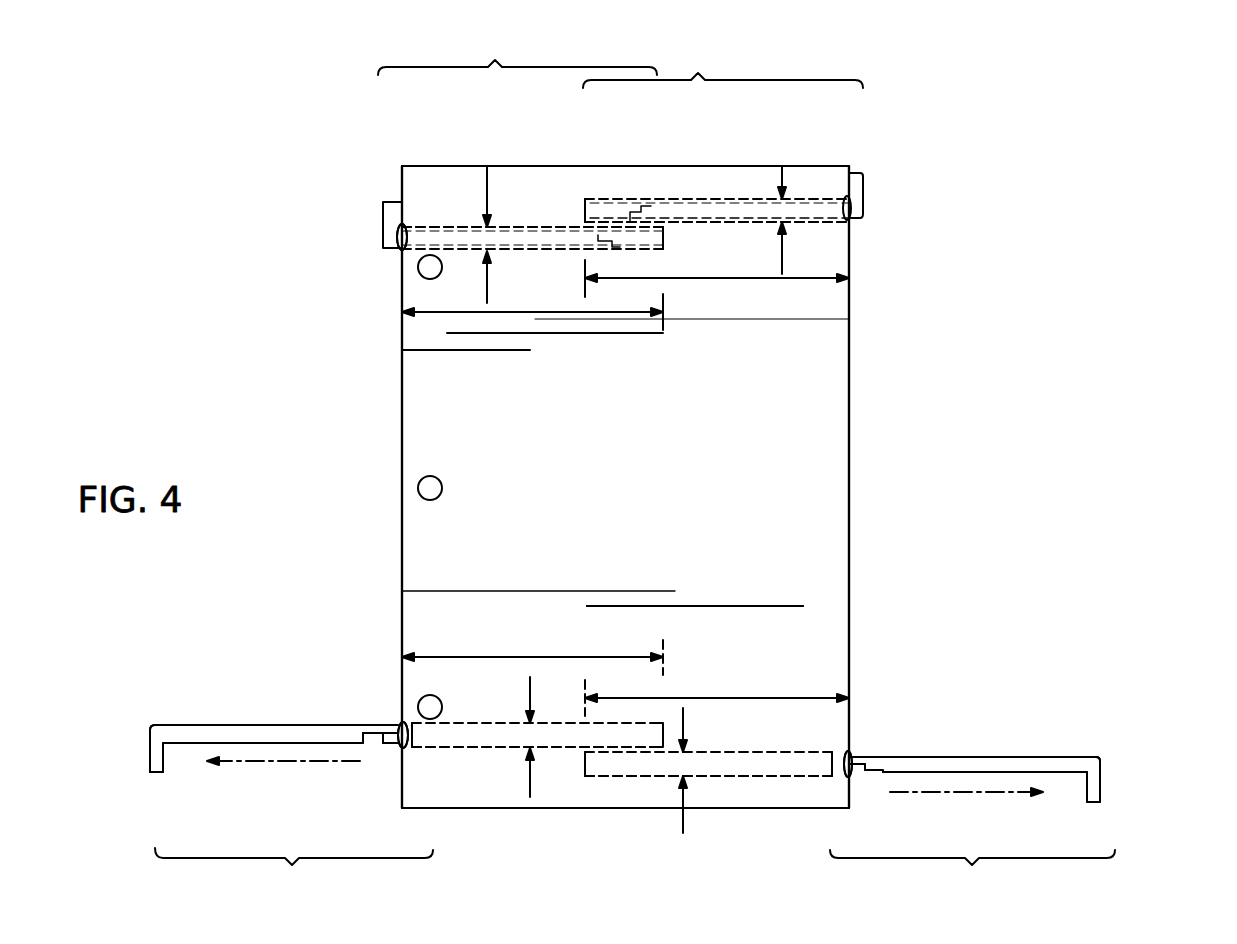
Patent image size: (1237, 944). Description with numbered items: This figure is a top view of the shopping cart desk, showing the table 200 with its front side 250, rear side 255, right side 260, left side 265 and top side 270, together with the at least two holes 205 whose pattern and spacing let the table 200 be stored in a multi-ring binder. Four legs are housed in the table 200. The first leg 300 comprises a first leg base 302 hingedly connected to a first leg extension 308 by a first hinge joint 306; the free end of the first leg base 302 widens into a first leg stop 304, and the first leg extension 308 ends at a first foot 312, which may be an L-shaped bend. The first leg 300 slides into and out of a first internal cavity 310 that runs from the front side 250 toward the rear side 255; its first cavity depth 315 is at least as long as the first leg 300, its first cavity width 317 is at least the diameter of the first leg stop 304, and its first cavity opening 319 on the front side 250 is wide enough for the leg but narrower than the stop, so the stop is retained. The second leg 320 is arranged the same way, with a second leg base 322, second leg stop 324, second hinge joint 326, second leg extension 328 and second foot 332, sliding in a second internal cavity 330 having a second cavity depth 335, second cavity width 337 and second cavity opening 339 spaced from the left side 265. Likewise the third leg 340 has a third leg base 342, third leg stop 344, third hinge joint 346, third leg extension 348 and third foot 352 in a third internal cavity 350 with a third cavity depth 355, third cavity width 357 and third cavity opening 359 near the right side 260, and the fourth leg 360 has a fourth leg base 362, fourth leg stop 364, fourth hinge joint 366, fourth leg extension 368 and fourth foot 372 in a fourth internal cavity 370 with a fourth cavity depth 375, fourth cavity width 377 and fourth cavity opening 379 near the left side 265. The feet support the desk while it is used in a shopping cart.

The table 200 is at (849, 437).
The holes 205 is at (412, 690).
The front side 250 is at (855, 488).
The rear side 255 is at (396, 509).
The right side 260 is at (593, 160).
The left side 265 is at (725, 812).
The top side 270 is at (825, 344).
The first leg 300 is at (723, 130).
The first leg base 302 is at (618, 205).
The first leg stop 304 is at (585, 200).
The first hinge joint 306 is at (648, 206).
The first leg extension 308 is at (802, 218).
The first internal cavity 310 is at (849, 243).
The first foot 312 is at (866, 211).
The first cavity depth 315 is at (757, 279).
The first cavity width 317 is at (782, 167).
The first cavity opening 319 is at (857, 208).
The second leg 320 is at (850, 823).
The second leg base 322 is at (861, 763).
The second leg stop 324 is at (827, 752).
The second hinge joint 326 is at (884, 768).
The second leg extension 328 is at (1035, 767).
The second internal cavity 330 is at (783, 777).
The second foot 332 is at (1100, 782).
The second cavity depth 335 is at (712, 698).
The second cavity width 337 is at (683, 833).
The second cavity opening 339 is at (853, 777).
The third leg 340 is at (520, 138).
The third leg base 342 is at (641, 240).
The third leg stop 344 is at (660, 245).
The third hinge joint 346 is at (585, 260).
The third leg extension 348 is at (457, 240).
The third internal cavity 350 is at (432, 227).
The third foot 352 is at (383, 220).
The third cavity depth 355 is at (537, 320).
The third cavity width 357 is at (487, 180).
The third cavity opening 359 is at (385, 248).
The fourth leg 360 is at (409, 811).
The fourth leg base 362 is at (387, 745).
The fourth leg stop 364 is at (405, 748).
The fourth hinge joint 366 is at (363, 743).
The fourth leg extension 368 is at (255, 737).
The fourth internal cavity 370 is at (552, 748).
The fourth foot 372 is at (150, 748).
The fourth cavity depth 375 is at (512, 655).
The fourth cavity width 377 is at (530, 677).
The fourth cavity opening 379 is at (400, 723).